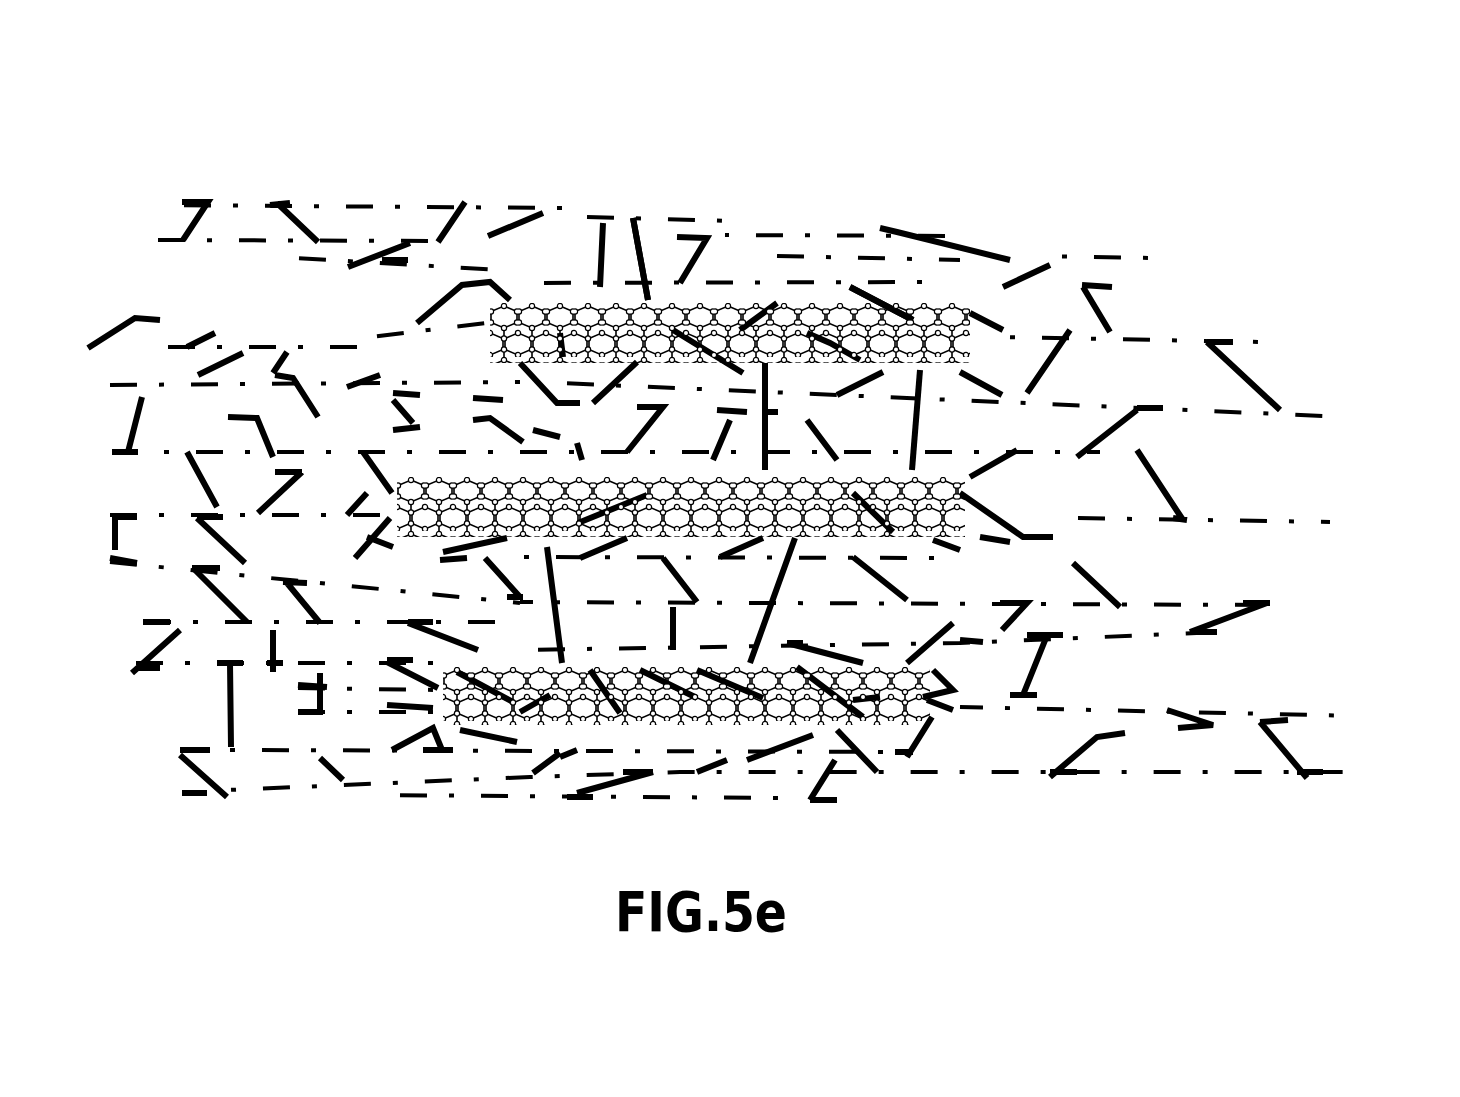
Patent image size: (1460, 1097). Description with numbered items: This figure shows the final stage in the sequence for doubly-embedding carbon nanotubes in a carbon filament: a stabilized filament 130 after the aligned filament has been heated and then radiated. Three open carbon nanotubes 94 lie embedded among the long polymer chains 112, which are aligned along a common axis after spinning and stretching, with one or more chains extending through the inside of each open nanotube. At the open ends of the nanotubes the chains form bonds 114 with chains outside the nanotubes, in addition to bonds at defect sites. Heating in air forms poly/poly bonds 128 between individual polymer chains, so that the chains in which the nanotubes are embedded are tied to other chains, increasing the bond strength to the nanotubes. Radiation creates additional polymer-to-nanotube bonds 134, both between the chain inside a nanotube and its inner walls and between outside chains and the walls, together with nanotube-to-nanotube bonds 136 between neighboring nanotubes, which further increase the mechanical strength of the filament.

The stabilized filament 130 is at (1298, 171).
The poly/poly bond 128 is at (182, 237).
The polymer chain 112 is at (560, 195).
The polymer-to-nanotube bond 134 is at (647, 255).
The carbon nanotube 94 is at (746, 282).
The nanotube-to-nanotube bond 136 is at (915, 420).
The bond 114 is at (965, 505).